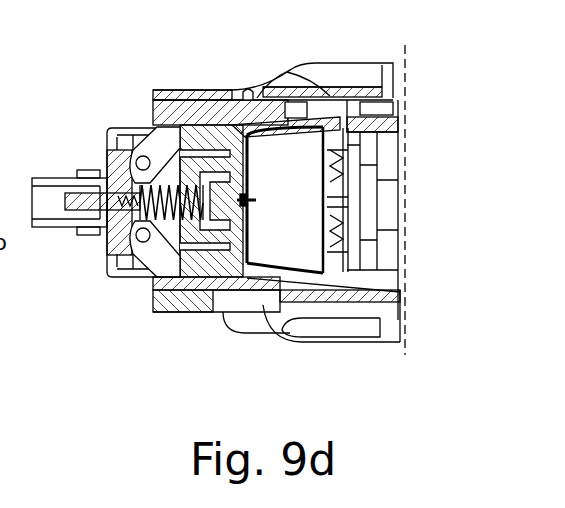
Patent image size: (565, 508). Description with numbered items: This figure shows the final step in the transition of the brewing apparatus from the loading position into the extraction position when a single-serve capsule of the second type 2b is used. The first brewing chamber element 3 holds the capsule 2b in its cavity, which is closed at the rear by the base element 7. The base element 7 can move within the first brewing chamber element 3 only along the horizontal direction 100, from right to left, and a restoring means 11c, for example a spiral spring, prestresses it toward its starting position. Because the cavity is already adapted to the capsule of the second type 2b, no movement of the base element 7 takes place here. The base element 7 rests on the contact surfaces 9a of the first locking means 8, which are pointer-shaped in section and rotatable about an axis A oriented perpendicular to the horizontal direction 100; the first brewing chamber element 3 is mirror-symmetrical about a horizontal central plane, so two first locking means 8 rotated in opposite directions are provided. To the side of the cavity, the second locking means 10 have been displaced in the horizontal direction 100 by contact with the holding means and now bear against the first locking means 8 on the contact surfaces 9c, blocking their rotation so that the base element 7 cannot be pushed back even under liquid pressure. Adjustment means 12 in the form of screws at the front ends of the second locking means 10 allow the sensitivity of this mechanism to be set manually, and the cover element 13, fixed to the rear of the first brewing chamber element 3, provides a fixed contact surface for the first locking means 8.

The horizontal direction 100 is at (458, 183).
The contact surfaces 9c is at (172, 128).
The second locking means 10 is at (226, 110).
The contact surfaces 9a is at (157, 133).
The cover element 13 is at (137, 186).
The restoring means 11c is at (122, 192).
The rotation axis A is at (130, 243).
The first locking means 8 is at (150, 268).
The first brewing chamber element 3 is at (165, 303).
The base element 7 is at (217, 258).
The adjustment means 12 is at (287, 297).
The single-serve capsule of the second type 2b is at (400, 268).